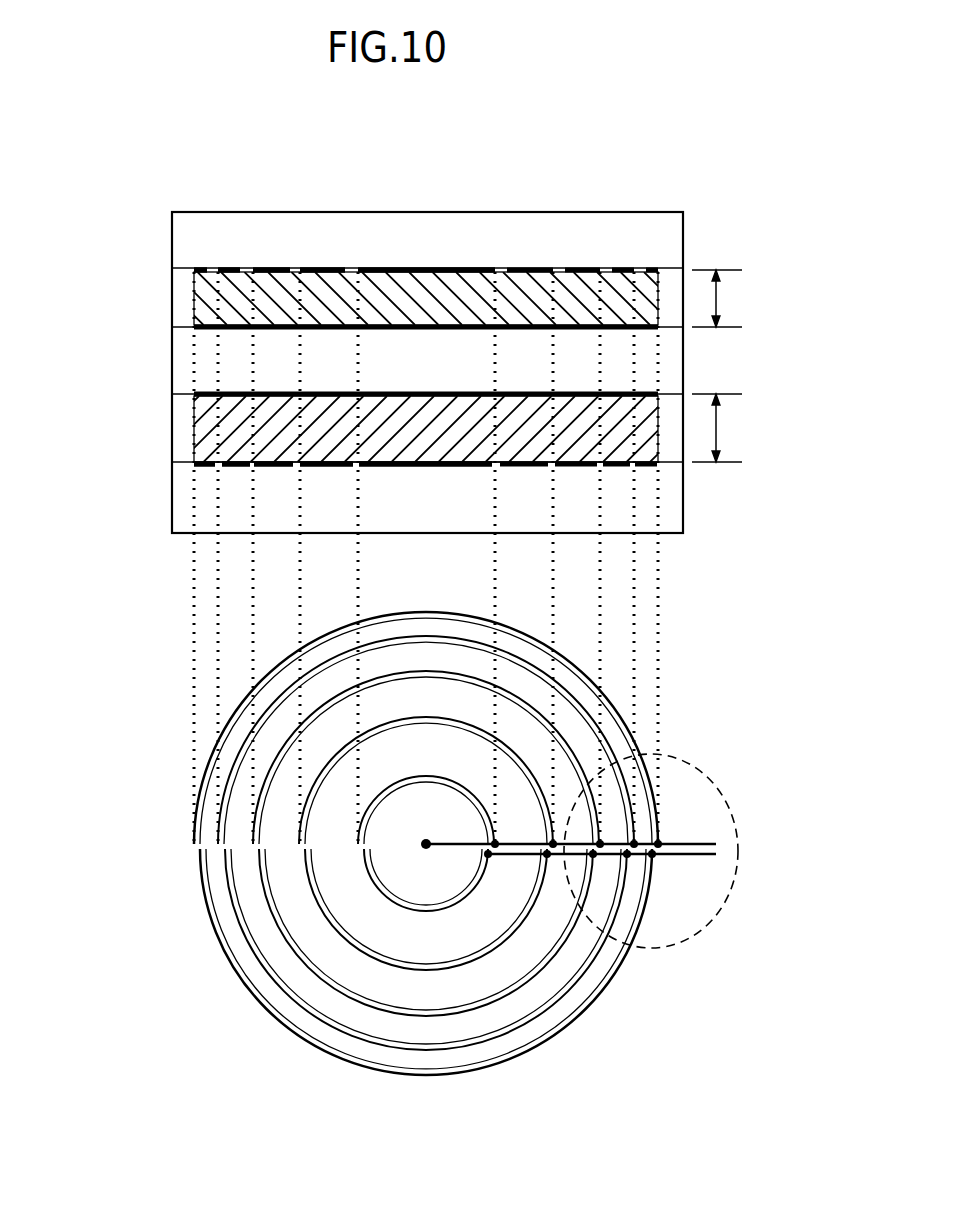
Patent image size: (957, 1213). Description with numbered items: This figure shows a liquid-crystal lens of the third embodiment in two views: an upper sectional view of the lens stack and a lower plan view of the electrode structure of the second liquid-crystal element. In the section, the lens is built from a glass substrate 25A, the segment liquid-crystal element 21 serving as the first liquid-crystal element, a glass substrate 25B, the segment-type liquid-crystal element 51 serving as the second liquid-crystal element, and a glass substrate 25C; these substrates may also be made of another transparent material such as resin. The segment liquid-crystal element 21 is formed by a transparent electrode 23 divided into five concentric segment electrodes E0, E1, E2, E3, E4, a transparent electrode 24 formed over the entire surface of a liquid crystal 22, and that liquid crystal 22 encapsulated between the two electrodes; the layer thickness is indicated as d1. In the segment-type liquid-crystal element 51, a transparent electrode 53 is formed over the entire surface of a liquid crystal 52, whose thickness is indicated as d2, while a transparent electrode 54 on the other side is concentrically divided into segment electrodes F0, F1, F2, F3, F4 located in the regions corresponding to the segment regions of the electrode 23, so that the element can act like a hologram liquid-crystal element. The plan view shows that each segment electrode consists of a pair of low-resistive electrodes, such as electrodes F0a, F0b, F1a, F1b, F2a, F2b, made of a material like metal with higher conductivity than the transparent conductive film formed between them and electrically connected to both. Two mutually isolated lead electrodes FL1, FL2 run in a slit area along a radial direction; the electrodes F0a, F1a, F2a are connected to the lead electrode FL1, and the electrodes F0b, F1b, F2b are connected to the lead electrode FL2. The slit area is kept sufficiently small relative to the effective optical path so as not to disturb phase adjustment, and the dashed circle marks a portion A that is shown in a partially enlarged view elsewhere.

The segment liquid-crystal element 21 is at (374, 303).
The liquid crystal 22 is at (467, 300).
The transparent electrode 23 is at (530, 268).
The transparent electrode 24 is at (586, 330).
The segment-type liquid-crystal element 51 is at (384, 432).
The liquid crystal 52 is at (425, 403).
The transparent electrode 53 is at (533, 396).
The transparent electrode 54 is at (452, 468).
The glass substrate 25A is at (660, 237).
The glass substrate 25B is at (660, 358).
The glass substrate 25C is at (660, 500).
The thickness of first liquid crystal layer d1 is at (722, 298).
The thickness of second liquid crystal layer d2 is at (722, 428).
The segment electrode E0 is at (426, 252).
The segment electrode E1 is at (322, 252).
The segment electrode E2 is at (271, 252).
The segment electrode E3 is at (233, 252).
The segment electrode E4 is at (201, 252).
The segment electrode F0 is at (426, 687).
The segment electrode F1 is at (426, 717).
The segment electrode F2 is at (426, 740).
The segment electrode F3 is at (426, 757).
The segment electrode F4 is at (200, 872).
The electrode F0a is at (422, 841).
The electrode F0b is at (456, 895).
The electrode F1a is at (420, 778).
The electrode F1b is at (460, 730).
The electrode F2a is at (430, 725).
The electrode F2b is at (333, 707).
The lead electrode FL1 is at (568, 834).
The lead electrode FL2 is at (600, 867).
The portion A is at (710, 776).